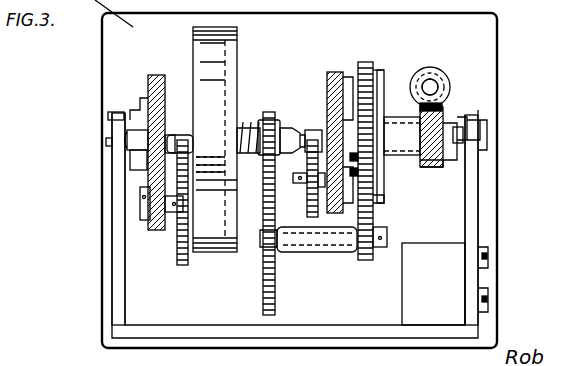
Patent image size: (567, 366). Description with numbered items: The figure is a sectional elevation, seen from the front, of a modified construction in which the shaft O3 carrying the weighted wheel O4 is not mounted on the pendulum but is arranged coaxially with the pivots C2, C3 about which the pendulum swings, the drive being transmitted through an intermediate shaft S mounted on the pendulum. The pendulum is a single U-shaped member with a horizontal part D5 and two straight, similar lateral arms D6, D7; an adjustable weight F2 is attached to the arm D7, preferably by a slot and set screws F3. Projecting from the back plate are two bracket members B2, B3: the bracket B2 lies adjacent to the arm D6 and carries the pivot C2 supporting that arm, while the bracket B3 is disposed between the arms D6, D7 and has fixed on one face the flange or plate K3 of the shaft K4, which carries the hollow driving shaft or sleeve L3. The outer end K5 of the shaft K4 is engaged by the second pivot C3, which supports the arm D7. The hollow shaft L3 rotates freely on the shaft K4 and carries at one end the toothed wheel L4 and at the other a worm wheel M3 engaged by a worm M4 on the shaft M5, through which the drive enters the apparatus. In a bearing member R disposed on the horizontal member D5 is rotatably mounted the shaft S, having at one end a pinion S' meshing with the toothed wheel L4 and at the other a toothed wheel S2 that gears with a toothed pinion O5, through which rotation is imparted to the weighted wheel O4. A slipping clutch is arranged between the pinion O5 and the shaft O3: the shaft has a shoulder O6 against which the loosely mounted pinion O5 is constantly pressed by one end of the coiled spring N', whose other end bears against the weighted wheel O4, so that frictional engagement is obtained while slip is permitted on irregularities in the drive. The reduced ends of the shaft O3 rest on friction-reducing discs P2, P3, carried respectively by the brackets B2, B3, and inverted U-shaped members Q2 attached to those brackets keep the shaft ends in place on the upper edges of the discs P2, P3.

The bracket member B2 is at (150, 73).
The inverted U-shaped member Q2 is at (323, 122).
The pivot C2 is at (130, 143).
The disc P2 is at (180, 177).
The pendulum arm D6 is at (118, 222).
The horizontal part of pendulum D5 is at (172, 337).
The toothed wheel S2 is at (263, 282).
The weighted wheel O4 is at (237, 31).
The coiled spring N' is at (249, 104).
The toothed pinion O5 is at (267, 118).
The shoulder O6 is at (276, 120).
The shaft O3 is at (291, 138).
The bracket member B3 is at (332, 72).
The flange or plate K3 is at (363, 61).
The toothed wheel L4 is at (373, 70).
The hollow driving shaft or sleeve L3 is at (390, 100).
The shaft K4 is at (403, 135).
The worm M4 is at (432, 80).
The shaft M5 is at (440, 78).
The outer end of shaft K5 is at (447, 113).
The pivot C3 is at (480, 118).
The pendulum arm D7 is at (467, 180).
The adjustable weight F2 is at (448, 270).
The set screws F3 is at (483, 292).
The disc P3 is at (383, 205).
The worm wheel M3 is at (433, 167).
The pinion S' is at (383, 236).
The bearing member R is at (340, 250).
The shaft S is at (330, 270).